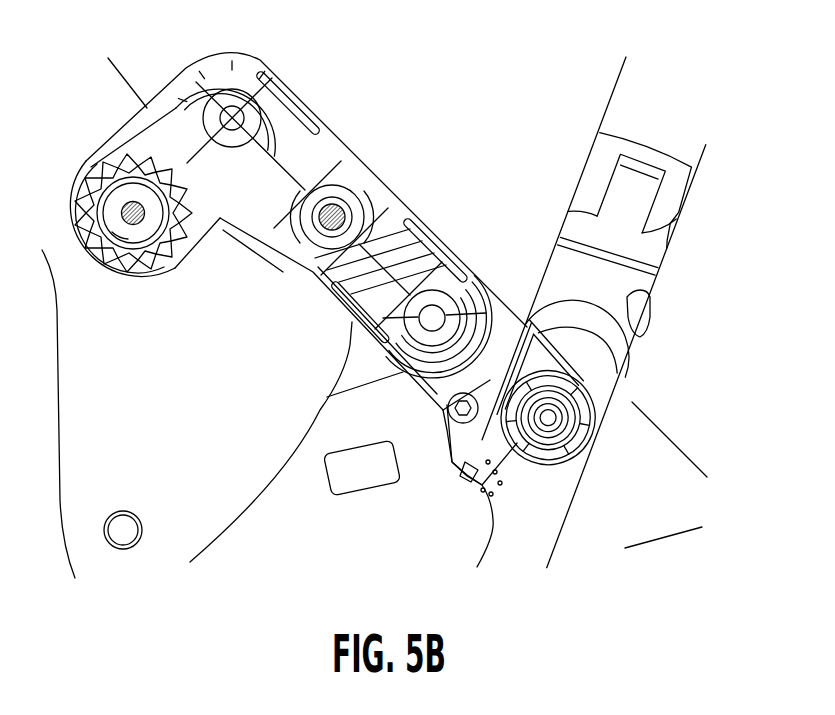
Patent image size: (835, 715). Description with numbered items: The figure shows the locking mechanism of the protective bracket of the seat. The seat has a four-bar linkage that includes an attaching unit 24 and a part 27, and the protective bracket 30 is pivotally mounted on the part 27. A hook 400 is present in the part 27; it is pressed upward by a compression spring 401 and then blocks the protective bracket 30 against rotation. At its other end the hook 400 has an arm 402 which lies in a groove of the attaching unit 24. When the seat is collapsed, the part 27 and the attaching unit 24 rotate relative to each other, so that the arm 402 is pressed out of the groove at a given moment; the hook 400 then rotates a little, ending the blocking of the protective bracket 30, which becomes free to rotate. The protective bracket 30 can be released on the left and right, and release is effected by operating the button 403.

The attaching unit 24 is at (322, 141).
The part 27 is at (563, 530).
The protective bracket 30 is at (672, 240).
The hook 400 is at (523, 420).
The compression spring 401 is at (473, 493).
The arm 402 is at (481, 330).
The button 403 is at (690, 285).